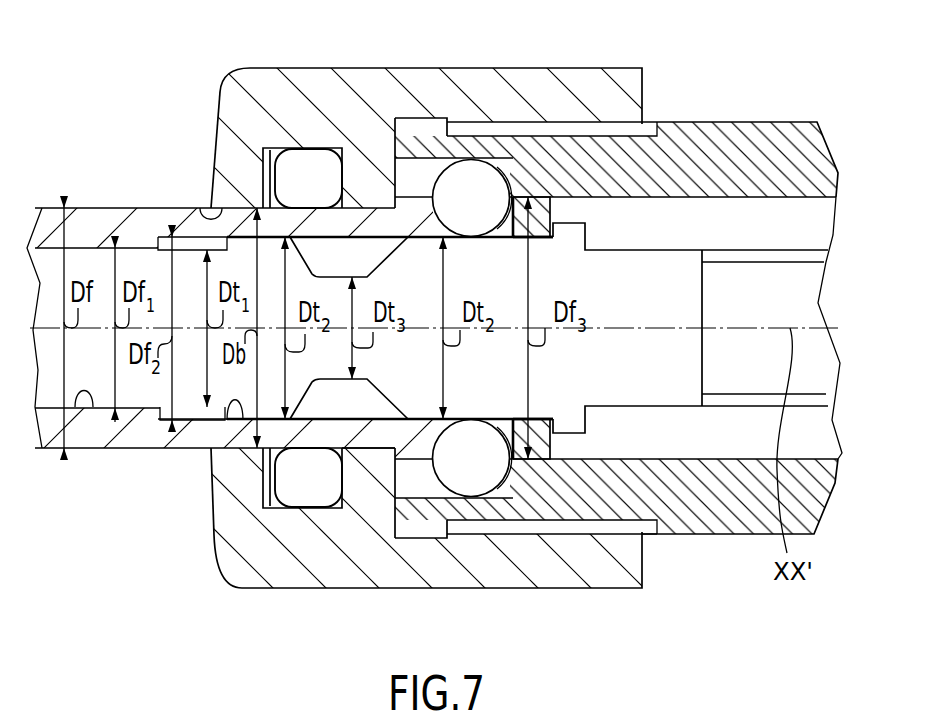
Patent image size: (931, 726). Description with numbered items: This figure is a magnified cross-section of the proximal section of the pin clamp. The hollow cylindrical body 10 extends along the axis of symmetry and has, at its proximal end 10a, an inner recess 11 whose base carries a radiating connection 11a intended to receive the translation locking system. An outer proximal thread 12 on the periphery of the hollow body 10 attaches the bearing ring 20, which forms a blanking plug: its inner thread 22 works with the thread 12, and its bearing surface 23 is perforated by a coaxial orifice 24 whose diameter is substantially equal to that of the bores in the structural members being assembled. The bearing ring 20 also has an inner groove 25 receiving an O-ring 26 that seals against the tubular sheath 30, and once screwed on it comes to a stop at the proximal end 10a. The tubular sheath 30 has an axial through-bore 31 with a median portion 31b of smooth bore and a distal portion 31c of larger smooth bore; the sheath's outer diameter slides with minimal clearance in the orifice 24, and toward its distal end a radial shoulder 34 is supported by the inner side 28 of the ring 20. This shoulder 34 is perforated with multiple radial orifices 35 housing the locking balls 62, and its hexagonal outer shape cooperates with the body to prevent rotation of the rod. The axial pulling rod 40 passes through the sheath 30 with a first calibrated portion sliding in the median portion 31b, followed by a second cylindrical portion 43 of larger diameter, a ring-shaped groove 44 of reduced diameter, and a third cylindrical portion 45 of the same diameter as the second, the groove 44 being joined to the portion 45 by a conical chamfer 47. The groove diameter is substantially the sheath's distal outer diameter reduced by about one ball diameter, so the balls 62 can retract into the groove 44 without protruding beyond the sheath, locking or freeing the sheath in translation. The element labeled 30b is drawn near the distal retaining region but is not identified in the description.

The hollow cylindrical body 10 is at (680, 122).
The proximal end 10a is at (458, 148).
The inner recess 11 is at (412, 168).
The radiating connection 11a is at (513, 160).
The outer proximal thread 12 is at (630, 134).
The bearing ring 20 is at (601, 588).
The inner thread 22 is at (577, 157).
The bearing surface 23 is at (213, 190).
The coaxial orifice 24 is at (204, 210).
The inner groove 25 is at (272, 148).
The O-ring 26 is at (305, 158).
The inner side 28 is at (387, 202).
The tubular sheath 30 is at (83, 228).
The retaining ring 30b is at (536, 500).
The axial through-bore 31 is at (216, 533).
The median portion 31b is at (85, 407).
The distal portion 31c is at (192, 448).
The radial shoulder 34 is at (430, 520).
The radial orifices 35 is at (614, 138).
The axial pulling rod 40 is at (682, 250).
The second cylindrical portion 43 is at (227, 420).
The ring-shaped groove 44 is at (300, 503).
The third cylindrical portion 45 is at (641, 535).
The conical chamfer 47 is at (358, 449).
The balls 62 is at (477, 478).